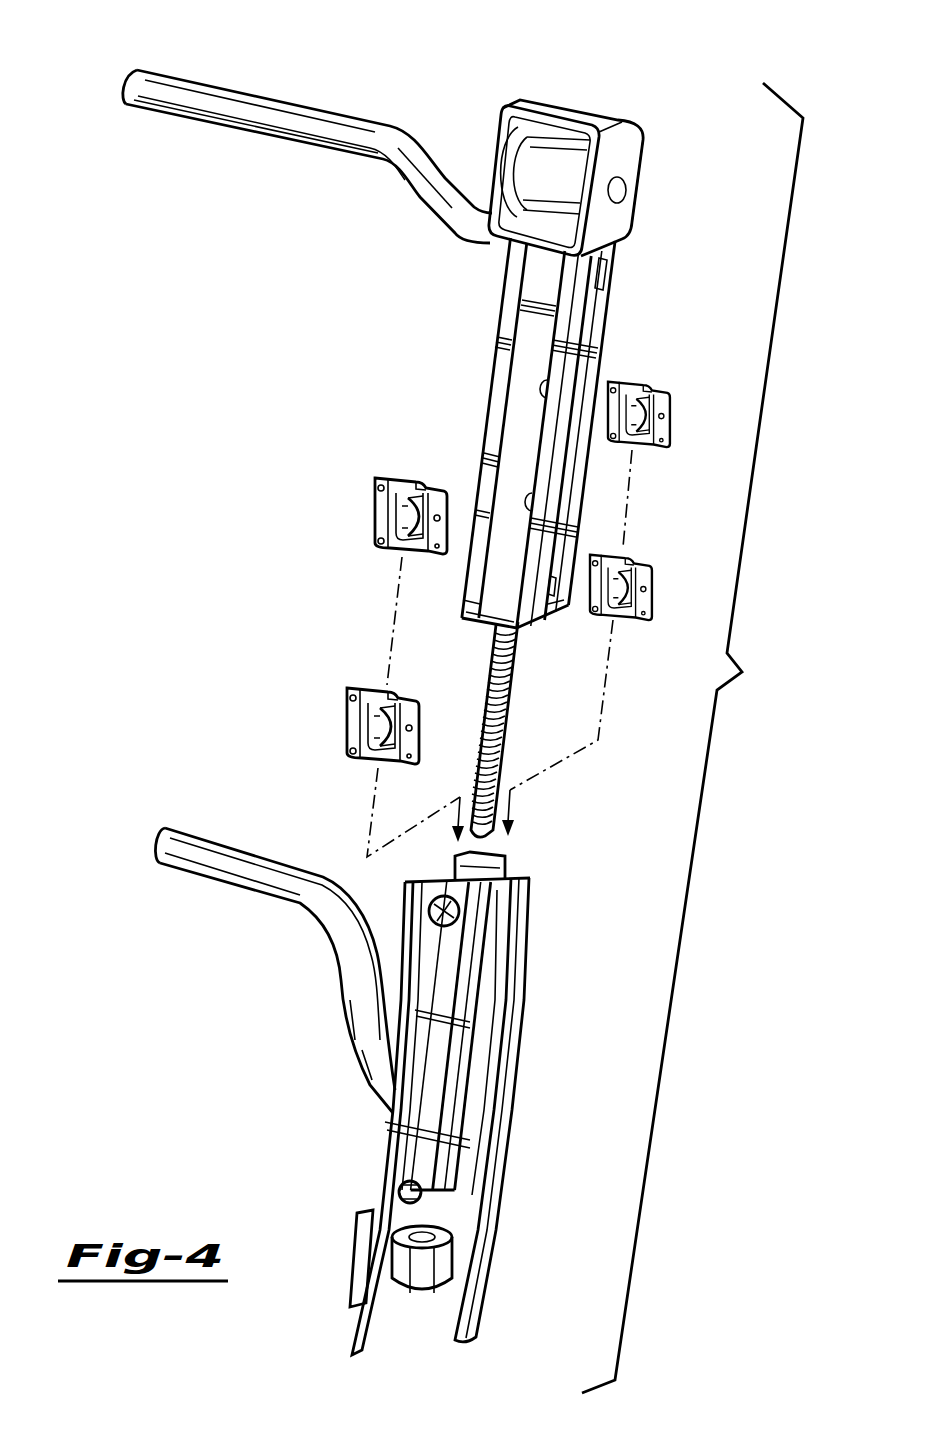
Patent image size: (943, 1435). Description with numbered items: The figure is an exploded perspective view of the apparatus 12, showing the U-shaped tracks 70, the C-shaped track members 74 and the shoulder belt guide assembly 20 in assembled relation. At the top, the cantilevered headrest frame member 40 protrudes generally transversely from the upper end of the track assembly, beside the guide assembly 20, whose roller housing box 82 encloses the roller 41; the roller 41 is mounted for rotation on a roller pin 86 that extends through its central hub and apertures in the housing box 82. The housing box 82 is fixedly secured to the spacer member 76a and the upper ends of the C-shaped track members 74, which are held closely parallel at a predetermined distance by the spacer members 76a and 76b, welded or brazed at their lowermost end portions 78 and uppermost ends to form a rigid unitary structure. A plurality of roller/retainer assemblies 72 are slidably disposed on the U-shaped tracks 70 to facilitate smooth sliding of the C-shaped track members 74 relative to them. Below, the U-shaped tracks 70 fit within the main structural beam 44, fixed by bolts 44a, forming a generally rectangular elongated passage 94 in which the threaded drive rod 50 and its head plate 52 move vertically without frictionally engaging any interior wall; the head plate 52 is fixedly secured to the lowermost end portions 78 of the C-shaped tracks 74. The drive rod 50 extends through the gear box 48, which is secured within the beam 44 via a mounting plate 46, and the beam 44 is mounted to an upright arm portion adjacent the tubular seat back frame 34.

The apparatus 12 is at (692, 738).
The shoulder belt guide assembly 20 is at (662, 150).
The tubular seat back frame 34 is at (248, 867).
The cantilevered headrest frame member 40 is at (288, 122).
The roller 41 is at (538, 178).
The main structural beam 44 is at (380, 1173).
The bolts 44a is at (427, 897).
The mounting plate 46 is at (352, 1272).
The gear box 48 is at (415, 1270).
The threaded drive rod 50 is at (510, 708).
The head plate 52 is at (492, 628).
The U-shaped tracks 70 is at (486, 962).
The roller/retainer assemblies 72 is at (668, 422).
The C-shaped track members 74 is at (590, 433).
The spacer member 76a is at (599, 268).
The spacer member 76b is at (551, 612).
The lowermost end portions 78 is at (498, 578).
The roller housing box 82 is at (593, 142).
The roller pin 86 is at (626, 189).
The passage 94 is at (480, 855).